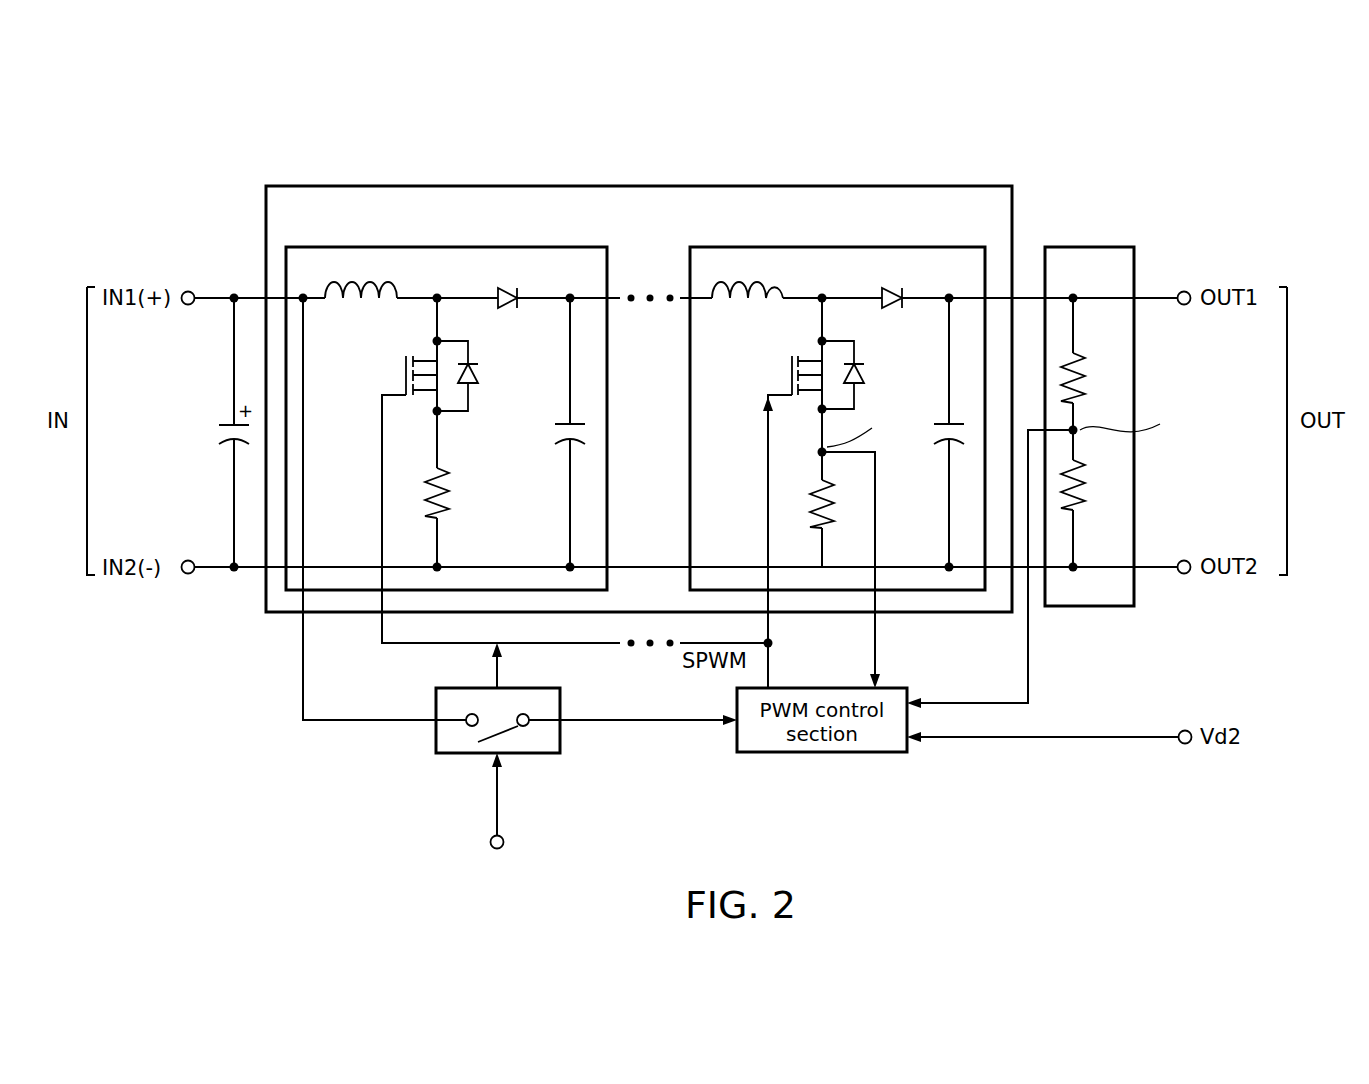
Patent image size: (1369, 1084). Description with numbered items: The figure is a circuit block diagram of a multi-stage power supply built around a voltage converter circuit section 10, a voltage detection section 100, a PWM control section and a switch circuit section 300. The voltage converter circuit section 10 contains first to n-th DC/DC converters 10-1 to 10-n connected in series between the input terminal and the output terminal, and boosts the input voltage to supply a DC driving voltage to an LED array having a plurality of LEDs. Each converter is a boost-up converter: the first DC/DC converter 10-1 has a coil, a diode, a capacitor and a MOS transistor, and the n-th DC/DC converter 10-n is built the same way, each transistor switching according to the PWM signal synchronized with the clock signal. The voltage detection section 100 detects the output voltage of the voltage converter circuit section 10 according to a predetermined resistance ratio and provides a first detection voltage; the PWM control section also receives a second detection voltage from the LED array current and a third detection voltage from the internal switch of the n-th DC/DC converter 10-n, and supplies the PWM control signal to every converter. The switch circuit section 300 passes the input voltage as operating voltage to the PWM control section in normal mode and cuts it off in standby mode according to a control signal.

The voltage converter circuit section 10 is at (632, 187).
The first DC/DC converter 10-1 is at (442, 248).
The n-th DC/DC converter 10-n is at (835, 247).
The voltage detection section 100 is at (1088, 247).
The switch circuit section 300 is at (560, 746).